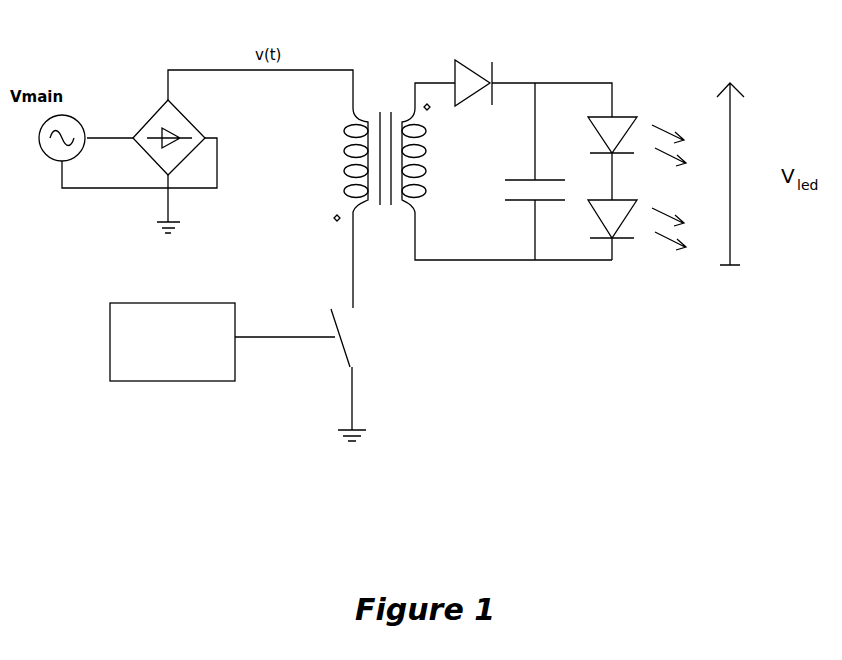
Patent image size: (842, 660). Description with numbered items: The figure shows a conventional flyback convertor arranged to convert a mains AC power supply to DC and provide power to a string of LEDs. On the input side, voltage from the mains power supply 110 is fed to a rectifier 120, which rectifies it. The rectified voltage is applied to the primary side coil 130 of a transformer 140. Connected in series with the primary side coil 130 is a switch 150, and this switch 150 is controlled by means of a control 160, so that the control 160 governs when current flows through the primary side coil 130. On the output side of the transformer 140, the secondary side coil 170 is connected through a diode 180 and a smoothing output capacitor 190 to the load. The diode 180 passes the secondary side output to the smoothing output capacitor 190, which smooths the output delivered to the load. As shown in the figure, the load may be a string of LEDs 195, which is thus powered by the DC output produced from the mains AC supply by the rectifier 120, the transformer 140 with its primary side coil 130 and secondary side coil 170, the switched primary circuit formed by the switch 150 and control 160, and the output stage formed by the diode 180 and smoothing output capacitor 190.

The mains power supply 110 is at (77, 118).
The rectifier 120 is at (152, 117).
The primary side coil 130 is at (345, 118).
The transformer 140 is at (385, 214).
The switch 150 is at (350, 337).
The control 160 is at (222, 373).
The secondary side coil 170 is at (410, 103).
The diode 180 is at (475, 72).
The smoothing output capacitor 190 is at (547, 212).
The string of LEDs 195 is at (625, 110).